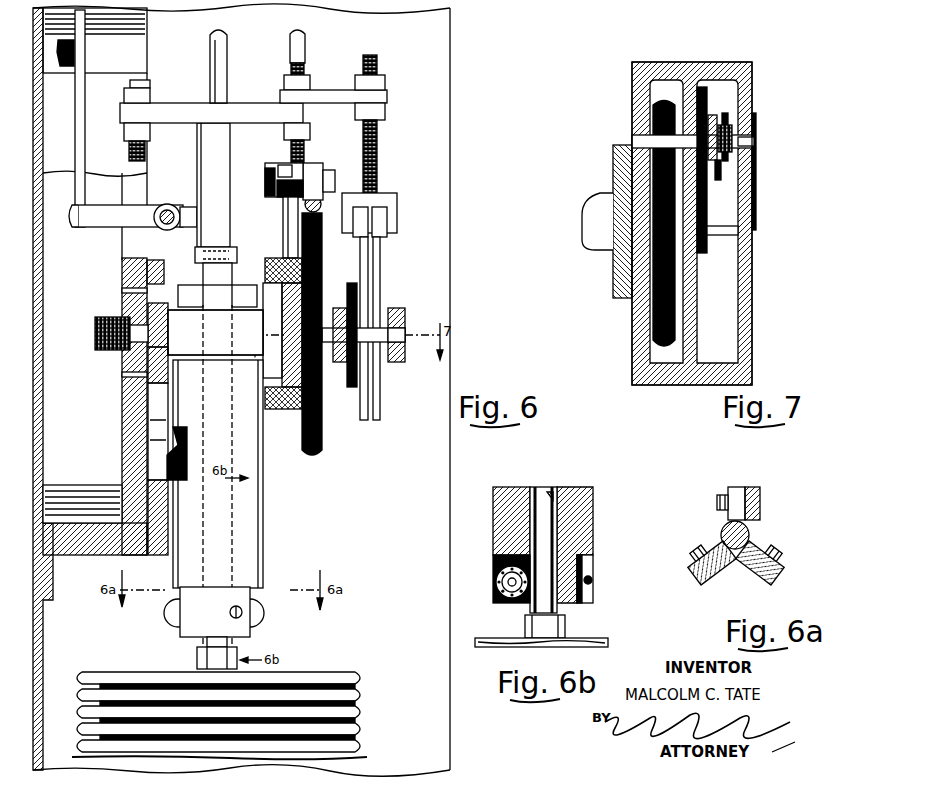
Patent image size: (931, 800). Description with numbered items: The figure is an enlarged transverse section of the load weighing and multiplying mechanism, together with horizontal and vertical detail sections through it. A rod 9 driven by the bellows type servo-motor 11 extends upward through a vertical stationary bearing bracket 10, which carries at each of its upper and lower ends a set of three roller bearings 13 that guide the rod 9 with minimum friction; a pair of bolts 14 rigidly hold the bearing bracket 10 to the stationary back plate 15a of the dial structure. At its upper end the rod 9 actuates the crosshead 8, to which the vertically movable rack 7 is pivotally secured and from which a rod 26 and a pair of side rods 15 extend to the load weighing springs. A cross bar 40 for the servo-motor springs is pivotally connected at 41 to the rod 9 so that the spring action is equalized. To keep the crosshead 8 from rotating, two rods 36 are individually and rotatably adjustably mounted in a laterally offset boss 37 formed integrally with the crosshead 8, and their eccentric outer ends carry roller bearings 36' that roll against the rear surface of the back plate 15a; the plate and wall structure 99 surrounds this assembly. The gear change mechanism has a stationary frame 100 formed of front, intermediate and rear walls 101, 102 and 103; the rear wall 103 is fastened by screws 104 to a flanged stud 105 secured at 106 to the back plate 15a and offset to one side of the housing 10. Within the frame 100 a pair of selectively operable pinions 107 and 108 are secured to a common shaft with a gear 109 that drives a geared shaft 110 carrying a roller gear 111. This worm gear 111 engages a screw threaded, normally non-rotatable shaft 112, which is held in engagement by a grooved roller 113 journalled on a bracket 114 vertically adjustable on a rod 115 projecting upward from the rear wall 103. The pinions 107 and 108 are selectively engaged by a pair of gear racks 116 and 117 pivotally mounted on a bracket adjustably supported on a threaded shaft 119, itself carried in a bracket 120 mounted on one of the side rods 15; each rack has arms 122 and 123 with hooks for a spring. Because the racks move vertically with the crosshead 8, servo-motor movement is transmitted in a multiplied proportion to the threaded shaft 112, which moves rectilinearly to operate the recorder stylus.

In FIG. 6, the vertically movable rack 7 is at (78, 148).
In FIG. 6, the crosshead 8 is at (197, 143).
In FIG. 6, the rod 9 is at (188, 283).
In FIG. 6B, the rod 9 is at (540, 502).
In FIG. 6A, the rod 9 is at (750, 530).
In FIG. 6, the bearing bracket 10 is at (265, 468).
In FIG. 6B, the bearing bracket 10 is at (585, 527).
In FIG. 6A, the bearing bracket 10 is at (760, 504).
In FIG. 6, the servo-motor 11 is at (272, 695).
In FIG. 6B, the servo-motor 11 is at (505, 640).
In FIG. 6, the roller bearings 13 is at (177, 298).
In FIG. 6B, the roller bearings 13 is at (497, 585).
In FIG. 6A, the roller bearings 13 is at (725, 525).
In FIG. 6, the bolts 14 is at (180, 440).
In FIG. 6, the side rods 15 is at (128, 87).
In FIG. 6, the back plate 15a is at (127, 461).
In FIG. 6, the rod 26 is at (211, 62).
In FIG. 6, the rods 36 is at (126, 217).
In FIG. 6, the roller bearings 36' is at (171, 194).
In FIG. 6, the boss 37 is at (192, 205).
In FIG. 6, the cross bar 40 is at (236, 255).
In FIG. 6, the pivotal connection 41 is at (194, 254).
In FIG. 6, the frame wall 99 is at (40, 284).
In FIG. 7, the stationary frame 100 is at (758, 93).
In FIG. 6, the front wall 101 is at (396, 308).
In FIG. 7, the front wall 101 is at (745, 340).
In FIG. 6, the intermediate wall 102 is at (340, 308).
In FIG. 7, the intermediate wall 102 is at (690, 350).
In FIG. 6, the rear wall 103 is at (294, 409).
In FIG. 7, the rear wall 103 is at (638, 352).
In FIG. 6, the screws 104 is at (278, 268).
In FIG. 6, the flanged stud 105 is at (214, 356).
In FIG. 7, the flanged stud 105 is at (618, 268).
In FIG. 6, the securing means 106 is at (112, 350).
In FIG. 7, the pinion 107 is at (712, 115).
In FIG. 7, the pinion 108 is at (726, 126).
In FIG. 7, the gear 109 is at (700, 90).
In FIG. 7, the geared shaft 110 is at (725, 236).
In FIG. 6, the roller gear 111 is at (322, 435).
In FIG. 7, the roller gear 111 is at (668, 268).
In FIG. 6, the threaded shaft 112 is at (321, 205).
In FIG. 6, the grooved roller 113 is at (313, 168).
In FIG. 6, the bracket 114 is at (283, 170).
In FIG. 6, the rod 115 is at (290, 205).
In FIG. 6, the gear rack 116 is at (378, 264).
In FIG. 7, the gear rack 116 is at (727, 160).
In FIG. 6, the gear rack 117 is at (362, 251).
In FIG. 7, the gear rack 117 is at (718, 180).
In FIG. 6, the threaded shaft 119 is at (380, 146).
In FIG. 6, the bracket 120 is at (328, 94).
In FIG. 6, the arm 122 is at (388, 238).
In FIG. 6, the arm 123 is at (356, 238).